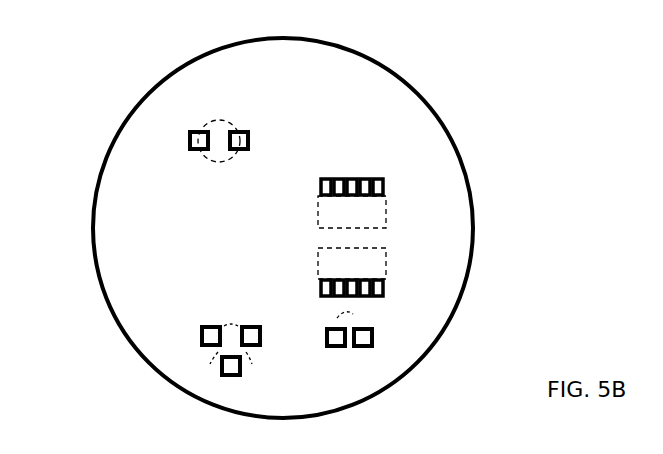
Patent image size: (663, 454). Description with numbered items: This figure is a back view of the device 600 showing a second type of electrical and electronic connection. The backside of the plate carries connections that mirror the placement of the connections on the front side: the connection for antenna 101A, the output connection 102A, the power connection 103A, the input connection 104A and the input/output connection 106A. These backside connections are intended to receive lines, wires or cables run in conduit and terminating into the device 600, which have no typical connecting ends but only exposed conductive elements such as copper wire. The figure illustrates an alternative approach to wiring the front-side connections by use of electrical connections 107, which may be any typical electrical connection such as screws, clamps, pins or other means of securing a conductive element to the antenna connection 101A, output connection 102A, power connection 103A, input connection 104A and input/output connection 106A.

The device 600 is at (412, 88).
The input/output connection 106A is at (218, 123).
The output connection 102A is at (360, 215).
The input connection 104A is at (360, 267).
The power connection 103A is at (355, 317).
The connection for antenna 101A is at (215, 352).
The electrical connections 107 is at (324, 333).